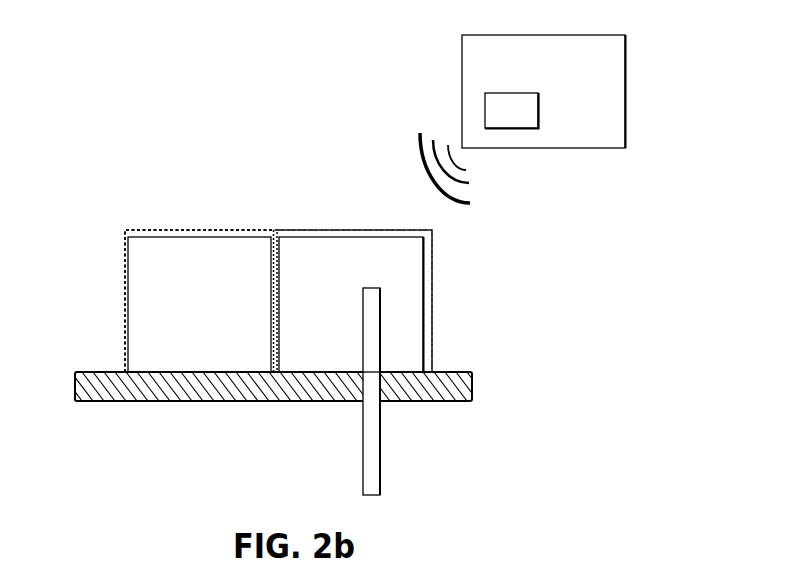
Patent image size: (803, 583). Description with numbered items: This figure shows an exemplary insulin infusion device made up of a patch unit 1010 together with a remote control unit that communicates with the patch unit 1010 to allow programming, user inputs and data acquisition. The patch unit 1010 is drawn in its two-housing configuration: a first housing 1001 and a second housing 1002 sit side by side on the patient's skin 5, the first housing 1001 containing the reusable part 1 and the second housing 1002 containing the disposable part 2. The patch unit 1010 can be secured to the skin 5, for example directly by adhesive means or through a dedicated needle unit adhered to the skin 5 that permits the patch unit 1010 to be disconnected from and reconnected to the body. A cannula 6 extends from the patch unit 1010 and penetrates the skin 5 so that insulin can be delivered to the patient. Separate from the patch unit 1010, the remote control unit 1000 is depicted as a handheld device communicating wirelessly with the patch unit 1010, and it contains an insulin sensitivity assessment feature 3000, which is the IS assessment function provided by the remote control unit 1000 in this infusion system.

The reusable part 1 is at (158, 298).
The disposable part 2 is at (407, 340).
The skin 5 is at (477, 393).
The cannula 6 is at (368, 440).
The reader device 1000 is at (582, 32).
The housing 1001 is at (123, 312).
The housing 1002 is at (435, 263).
The patch unit 1010 is at (172, 207).
The insulin sensitivity (IS) assessment feature 3000 is at (493, 108).